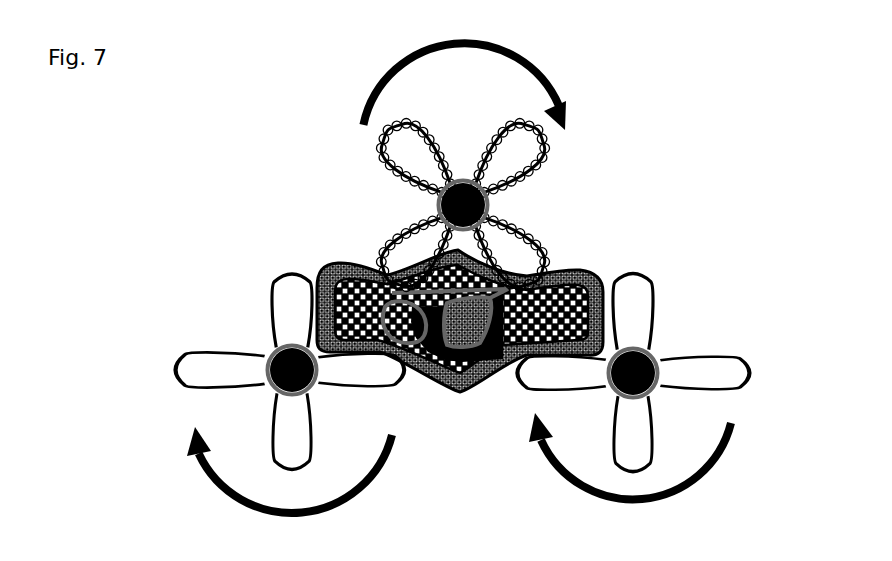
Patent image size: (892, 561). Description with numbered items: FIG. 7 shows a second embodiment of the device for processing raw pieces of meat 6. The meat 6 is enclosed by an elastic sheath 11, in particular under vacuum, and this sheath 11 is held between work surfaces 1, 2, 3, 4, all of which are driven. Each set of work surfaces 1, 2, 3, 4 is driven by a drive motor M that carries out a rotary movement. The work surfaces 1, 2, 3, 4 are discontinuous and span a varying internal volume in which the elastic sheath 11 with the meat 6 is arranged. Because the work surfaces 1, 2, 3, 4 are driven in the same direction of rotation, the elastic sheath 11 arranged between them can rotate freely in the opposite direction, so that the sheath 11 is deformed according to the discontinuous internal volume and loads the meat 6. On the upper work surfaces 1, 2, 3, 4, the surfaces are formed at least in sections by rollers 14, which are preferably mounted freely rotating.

The work surface 1 is at (543, 167).
The work surface 2 is at (537, 248).
The work surface 3 is at (407, 228).
The work surface 4 is at (218, 355).
The raw pieces of meat 6 is at (372, 270).
The elastic sheath 11 is at (460, 338).
The rollers 14 is at (430, 132).
The drive motor M is at (497, 206).